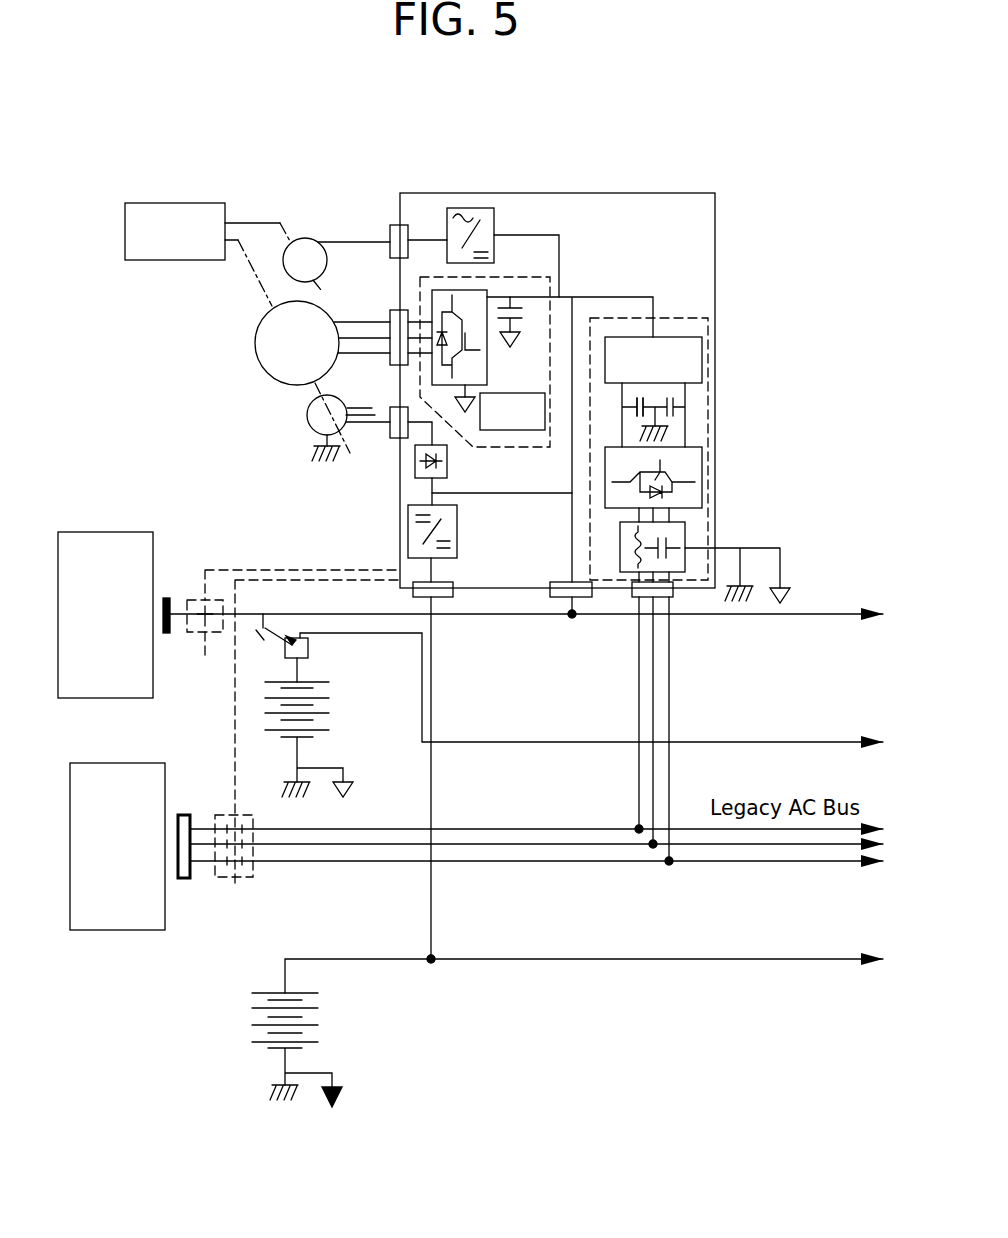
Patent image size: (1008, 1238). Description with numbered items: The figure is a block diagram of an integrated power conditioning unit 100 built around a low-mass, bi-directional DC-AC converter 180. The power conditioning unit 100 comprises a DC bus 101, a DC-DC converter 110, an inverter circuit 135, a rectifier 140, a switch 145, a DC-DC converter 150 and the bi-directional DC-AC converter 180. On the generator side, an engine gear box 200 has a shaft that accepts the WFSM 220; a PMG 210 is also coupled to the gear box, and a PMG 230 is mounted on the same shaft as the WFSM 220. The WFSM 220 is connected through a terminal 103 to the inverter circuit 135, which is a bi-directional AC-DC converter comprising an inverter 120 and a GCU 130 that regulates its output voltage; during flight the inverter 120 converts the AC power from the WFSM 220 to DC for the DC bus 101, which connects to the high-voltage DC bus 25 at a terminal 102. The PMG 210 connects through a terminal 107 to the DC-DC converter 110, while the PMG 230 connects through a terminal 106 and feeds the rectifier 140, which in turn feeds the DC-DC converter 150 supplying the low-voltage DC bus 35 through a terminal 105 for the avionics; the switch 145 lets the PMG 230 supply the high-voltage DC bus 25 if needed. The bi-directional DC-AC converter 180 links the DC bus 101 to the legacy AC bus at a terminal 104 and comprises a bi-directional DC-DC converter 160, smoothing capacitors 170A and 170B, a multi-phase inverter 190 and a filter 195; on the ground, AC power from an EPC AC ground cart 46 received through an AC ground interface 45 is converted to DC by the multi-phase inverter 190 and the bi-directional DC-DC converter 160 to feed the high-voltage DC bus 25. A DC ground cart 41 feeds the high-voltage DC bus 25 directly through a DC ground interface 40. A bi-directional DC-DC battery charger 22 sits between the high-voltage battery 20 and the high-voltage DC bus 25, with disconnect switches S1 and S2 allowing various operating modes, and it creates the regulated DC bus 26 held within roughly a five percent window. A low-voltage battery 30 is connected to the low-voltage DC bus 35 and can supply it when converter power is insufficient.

The power conditioning unit 100 is at (764, 185).
The DC bus 101 is at (617, 297).
The terminal 102 is at (585, 600).
The terminal 103 is at (390, 318).
The terminal 104 is at (633, 597).
The low voltage / regulated bus connector 105 is at (447, 616).
The PMG with taps connector 106 is at (390, 412).
The PMG connector 107 is at (390, 232).
The DC-DC converter 110 is at (494, 224).
The inverter 120 is at (472, 296).
The GCU 130 is at (510, 432).
The inverter circuit 135 is at (523, 273).
The rectifier 140 is at (415, 462).
The switch 145 is at (490, 494).
The DC-DC converter 150 is at (408, 528).
The bi-directional DC-DC converter 160 is at (680, 348).
The smoothing capacitor 170A is at (637, 405).
The smoothing capacitor 170B is at (685, 400).
The bi-directional DC-AC converter 180 is at (675, 315).
The multi-phase inverter 190 is at (690, 462).
The filter 195 is at (678, 531).
The engine gear box 200 is at (175, 262).
The permanent magnet generator 210 is at (305, 238).
The WFSM 220 is at (255, 345).
The PMG 230 is at (307, 412).
The high-voltage battery 20 is at (310, 688).
The bi-directional DC-DC battery charger 22 is at (308, 648).
The high-voltage DC bus 25 is at (838, 613).
The regulated DC bus 26 is at (810, 742).
The low-voltage battery 30 is at (252, 1050).
The low-voltage DC bus 35 is at (815, 959).
The DC ground interface 40 is at (195, 658).
The DC ground cart 41 is at (117, 532).
The AC ground interface 45 is at (232, 890).
The EPC AC ground cart 46 is at (117, 930).
The disconnect switch S1 is at (272, 628).
The disconnect switch S2 is at (257, 640).